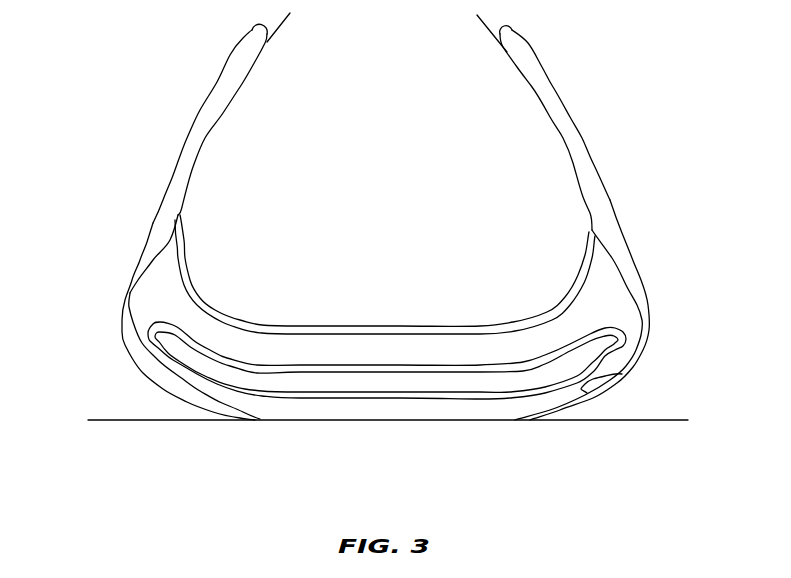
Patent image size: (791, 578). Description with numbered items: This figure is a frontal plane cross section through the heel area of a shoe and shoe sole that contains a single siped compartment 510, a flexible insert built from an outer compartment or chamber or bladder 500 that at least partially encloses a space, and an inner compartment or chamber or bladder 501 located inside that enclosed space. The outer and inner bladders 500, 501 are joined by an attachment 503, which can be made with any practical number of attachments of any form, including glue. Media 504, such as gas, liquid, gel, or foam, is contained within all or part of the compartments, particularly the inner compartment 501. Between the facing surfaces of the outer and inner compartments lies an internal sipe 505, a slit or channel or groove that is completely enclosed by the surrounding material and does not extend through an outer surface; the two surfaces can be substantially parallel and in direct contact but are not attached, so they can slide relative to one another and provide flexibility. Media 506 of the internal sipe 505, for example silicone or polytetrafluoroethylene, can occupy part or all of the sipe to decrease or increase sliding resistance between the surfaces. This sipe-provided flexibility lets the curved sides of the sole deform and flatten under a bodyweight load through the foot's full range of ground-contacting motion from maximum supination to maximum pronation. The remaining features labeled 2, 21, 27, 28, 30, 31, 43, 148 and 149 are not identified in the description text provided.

The liner 2 is at (385, 258).
The arms 21 is at (190, 140).
The interior cavity 27 is at (366, 111).
The inner surface 28 is at (418, 248).
The band 30 is at (348, 325).
The outer shell 31 is at (125, 348).
The ground surface 43 is at (153, 421).
The side region 148 is at (162, 300).
The bottom region 149 is at (175, 380).
The outer compartment 500 is at (386, 349).
The inner compartment 501 is at (478, 372).
The attachment 503 is at (200, 345).
The media 504 is at (315, 380).
The internal sipe 505 is at (395, 363).
The media of internal sipe 506 is at (623, 377).
The siped compartment 510 is at (413, 399).